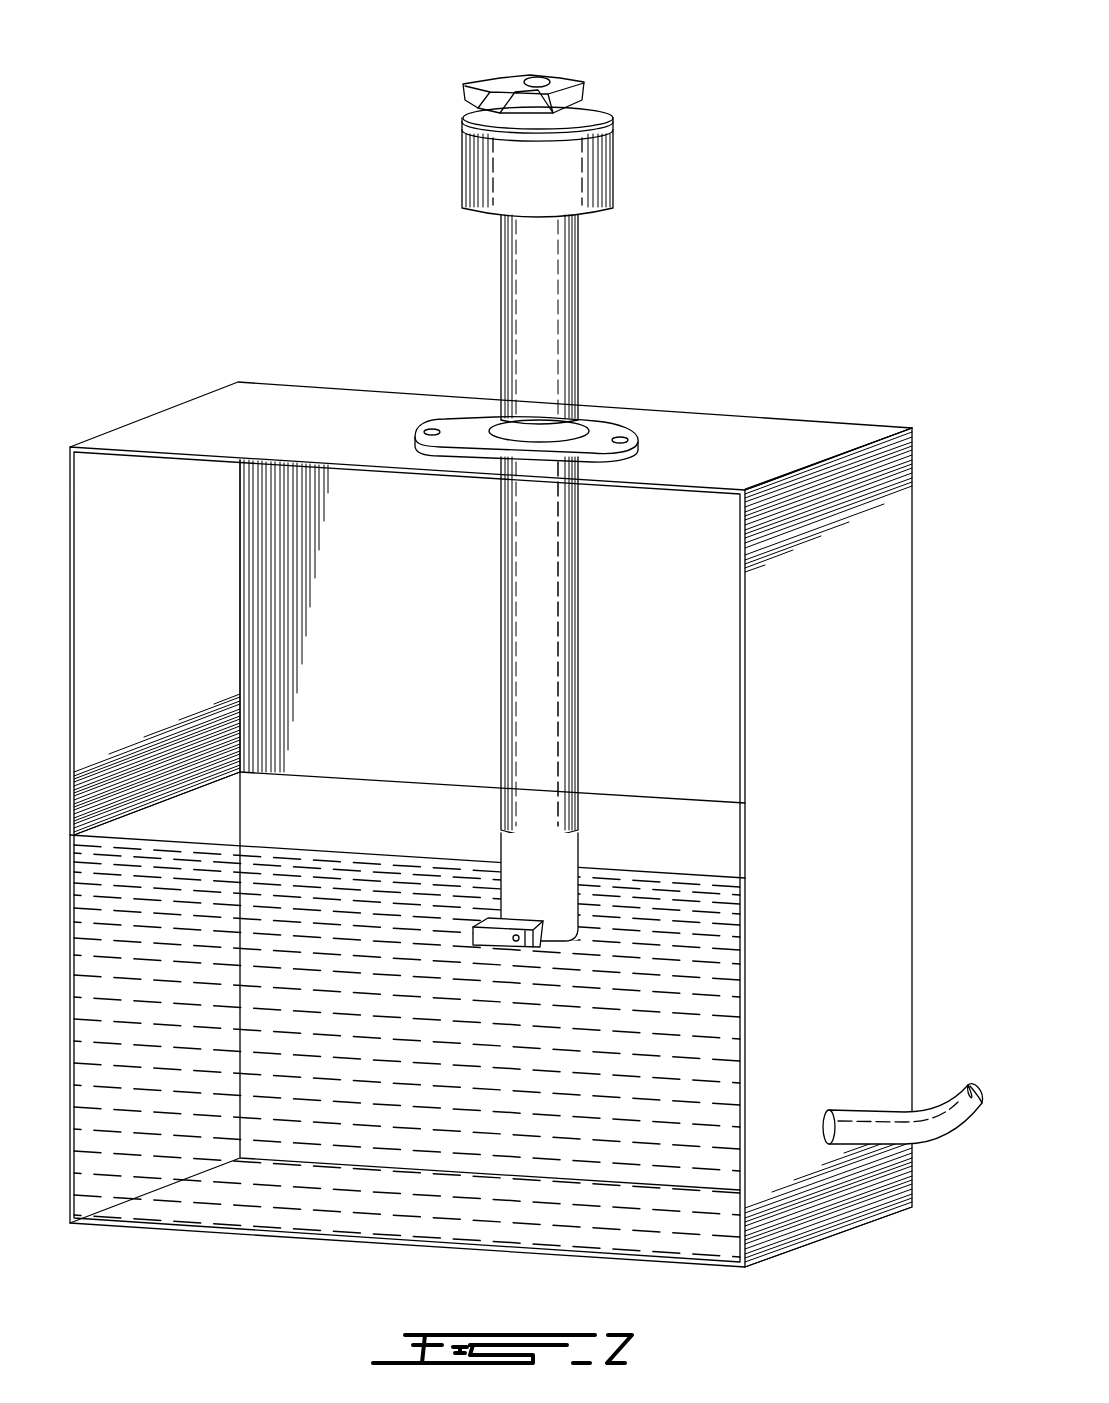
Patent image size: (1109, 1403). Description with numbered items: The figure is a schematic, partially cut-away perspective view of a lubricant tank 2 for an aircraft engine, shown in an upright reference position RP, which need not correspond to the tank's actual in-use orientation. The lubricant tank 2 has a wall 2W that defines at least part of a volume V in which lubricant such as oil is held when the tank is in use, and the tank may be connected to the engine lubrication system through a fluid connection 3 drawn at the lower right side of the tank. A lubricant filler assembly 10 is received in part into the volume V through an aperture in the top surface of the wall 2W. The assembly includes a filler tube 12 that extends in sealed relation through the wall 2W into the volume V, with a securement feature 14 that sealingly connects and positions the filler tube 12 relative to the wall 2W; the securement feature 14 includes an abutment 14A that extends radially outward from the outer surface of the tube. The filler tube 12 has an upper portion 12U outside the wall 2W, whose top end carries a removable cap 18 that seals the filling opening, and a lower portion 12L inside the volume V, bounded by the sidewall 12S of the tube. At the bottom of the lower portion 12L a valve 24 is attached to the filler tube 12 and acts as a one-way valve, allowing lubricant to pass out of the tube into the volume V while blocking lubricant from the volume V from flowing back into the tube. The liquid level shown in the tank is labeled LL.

The lubricant tank 2 is at (526, 726).
The wall 2W is at (852, 590).
The fluid connection 3 is at (946, 1096).
The lubricant filler assembly 10 is at (542, 650).
The filler tube 12 is at (540, 292).
The upper portion 12U is at (542, 154).
The lower portion 12L is at (581, 578).
The sidewall 12S is at (568, 750).
The securement feature 14 is at (513, 388).
The abutment 14A is at (428, 421).
The cap 18 is at (456, 92).
The valve 24 is at (485, 952).
The volume V is at (342, 605).
The liquid level LL is at (320, 855).
The upright reference position RP is at (884, 414).